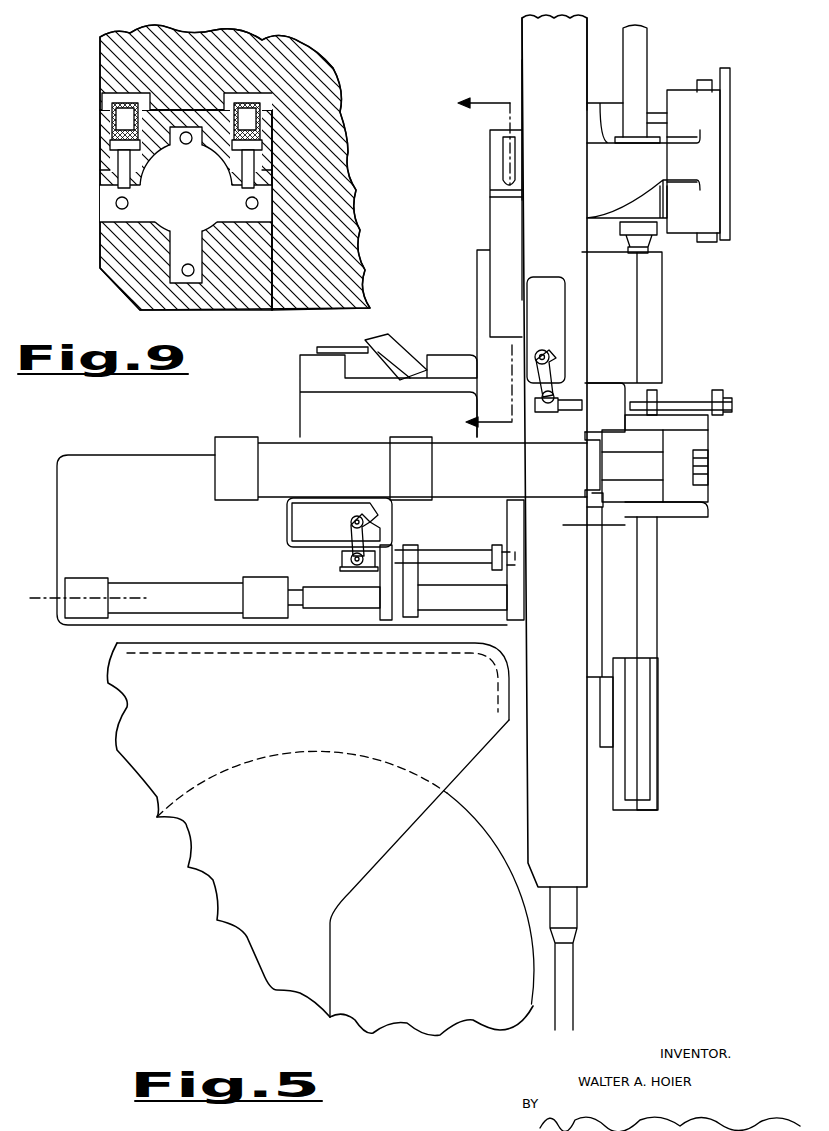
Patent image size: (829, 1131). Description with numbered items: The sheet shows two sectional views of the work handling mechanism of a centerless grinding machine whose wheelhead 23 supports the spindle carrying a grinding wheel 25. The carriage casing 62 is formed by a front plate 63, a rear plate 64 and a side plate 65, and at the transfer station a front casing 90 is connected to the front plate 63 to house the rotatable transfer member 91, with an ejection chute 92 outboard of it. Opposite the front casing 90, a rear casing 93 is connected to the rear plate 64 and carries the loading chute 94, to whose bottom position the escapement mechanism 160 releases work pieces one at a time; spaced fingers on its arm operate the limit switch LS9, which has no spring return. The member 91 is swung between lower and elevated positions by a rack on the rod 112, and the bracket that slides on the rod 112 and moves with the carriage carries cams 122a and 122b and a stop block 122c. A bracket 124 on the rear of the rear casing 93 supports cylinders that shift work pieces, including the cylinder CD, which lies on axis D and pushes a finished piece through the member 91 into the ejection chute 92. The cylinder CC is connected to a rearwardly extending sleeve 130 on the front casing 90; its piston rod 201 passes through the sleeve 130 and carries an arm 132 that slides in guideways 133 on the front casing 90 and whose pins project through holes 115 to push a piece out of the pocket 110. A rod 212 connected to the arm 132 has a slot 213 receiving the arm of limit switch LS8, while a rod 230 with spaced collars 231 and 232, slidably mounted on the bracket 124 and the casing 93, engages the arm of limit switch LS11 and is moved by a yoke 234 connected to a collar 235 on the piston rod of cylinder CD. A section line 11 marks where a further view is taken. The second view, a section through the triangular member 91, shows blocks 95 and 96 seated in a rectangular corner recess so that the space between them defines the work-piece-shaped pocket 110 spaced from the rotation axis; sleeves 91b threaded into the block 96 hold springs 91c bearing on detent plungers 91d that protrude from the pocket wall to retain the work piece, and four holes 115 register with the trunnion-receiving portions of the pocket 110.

In FIG. 9, the rotatable transfer member 91 is at (235, 167).
In FIG. 9, the sleeves 91b is at (112, 124).
In FIG. 9, the springs 91c is at (116, 140).
In FIG. 9, the detent plungers 91d is at (118, 171).
In FIG. 9, the block 96 is at (105, 196).
In FIG. 9, the pocket 110 is at (168, 265).
In FIG. 9, the holes 115 is at (185, 146).
In FIG. 9, the block 95 is at (262, 298).
In FIG. 5, the carriage casing 62 is at (518, 28).
In FIG. 5, the front plate 63 is at (587, 40).
In FIG. 5, the rear plate 64 is at (520, 62).
In FIG. 5, the side plate 65 is at (554, 451).
In FIG. 5, the rod 112 is at (647, 42).
In FIG. 5, the cam 122a is at (730, 90).
In FIG. 5, the cam 122b is at (704, 80).
In FIG. 5, the stop block 122c is at (667, 118).
In FIG. 5, the section line 11 is at (472, 263).
In FIG. 5, the loading chute 94 is at (503, 165).
In FIG. 5, the rear casing 93 is at (477, 270).
In FIG. 5, the limit switch LS8 is at (546, 330).
In FIG. 5, the rod 212 is at (630, 395).
In FIG. 5, the slot 213 is at (548, 412).
In FIG. 5, the guideways 133 is at (690, 412).
In FIG. 5, the piston rod 201 is at (650, 480).
In FIG. 5, the arm 132 is at (712, 482).
In FIG. 5, the front casing 90 is at (658, 600).
In FIG. 5, the ejection chute 92 is at (640, 760).
In FIG. 5, the limit switch LS9 is at (300, 362).
In FIG. 5, the escapement mechanism 160 is at (390, 340).
In FIG. 5, the cylinder CC is at (275, 443).
In FIG. 5, the bracket 124 is at (76, 455).
In FIG. 5, the limit switch LS11 is at (339, 522).
In FIG. 5, the collar 231 is at (398, 547).
In FIG. 5, the yoke 234 is at (418, 547).
In FIG. 5, the sleeve 130 is at (465, 530).
In FIG. 5, the rod 230 is at (465, 550).
In FIG. 5, the collar 235 is at (433, 596).
In FIG. 5, the collar 232 is at (510, 570).
In FIG. 5, the cylinder CD is at (130, 580).
In FIG. 5, the axis D is at (35, 606).
In FIG. 5, the wheelhead 23 is at (112, 708).
In FIG. 5, the grinding wheel 25 is at (345, 878).